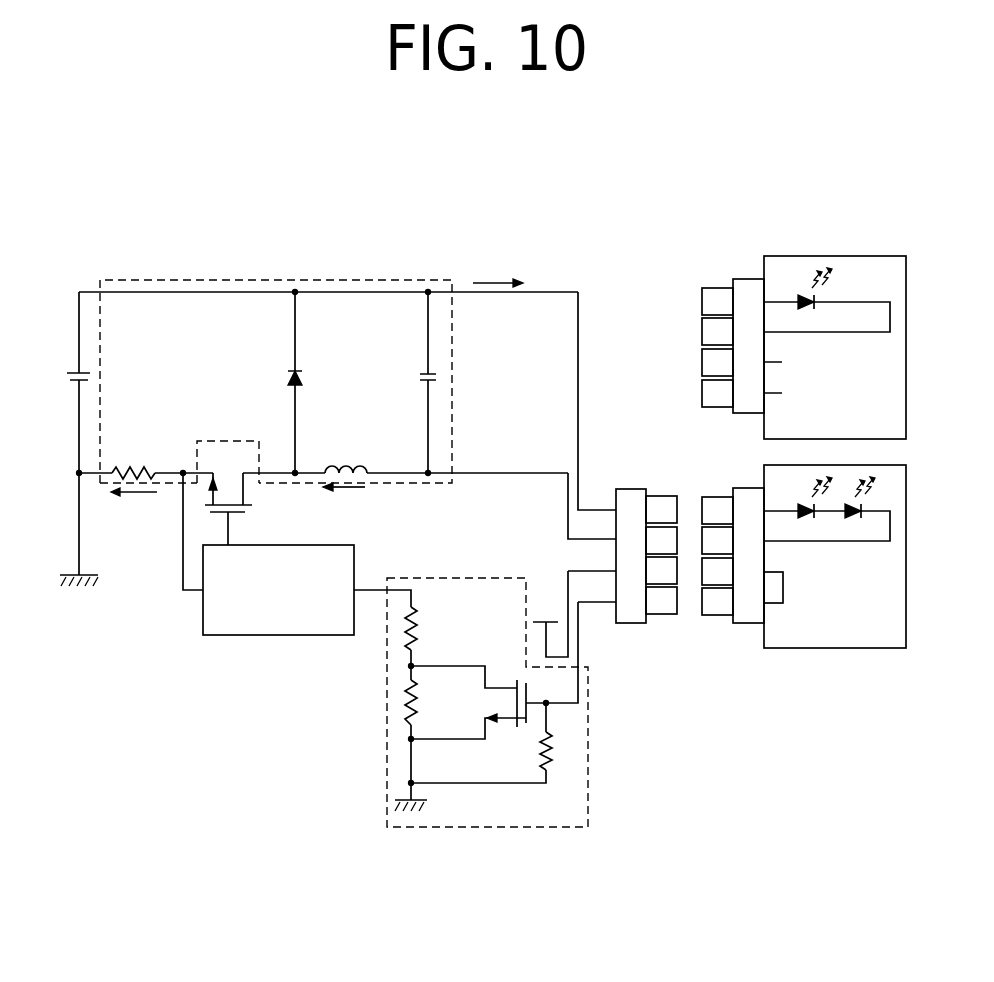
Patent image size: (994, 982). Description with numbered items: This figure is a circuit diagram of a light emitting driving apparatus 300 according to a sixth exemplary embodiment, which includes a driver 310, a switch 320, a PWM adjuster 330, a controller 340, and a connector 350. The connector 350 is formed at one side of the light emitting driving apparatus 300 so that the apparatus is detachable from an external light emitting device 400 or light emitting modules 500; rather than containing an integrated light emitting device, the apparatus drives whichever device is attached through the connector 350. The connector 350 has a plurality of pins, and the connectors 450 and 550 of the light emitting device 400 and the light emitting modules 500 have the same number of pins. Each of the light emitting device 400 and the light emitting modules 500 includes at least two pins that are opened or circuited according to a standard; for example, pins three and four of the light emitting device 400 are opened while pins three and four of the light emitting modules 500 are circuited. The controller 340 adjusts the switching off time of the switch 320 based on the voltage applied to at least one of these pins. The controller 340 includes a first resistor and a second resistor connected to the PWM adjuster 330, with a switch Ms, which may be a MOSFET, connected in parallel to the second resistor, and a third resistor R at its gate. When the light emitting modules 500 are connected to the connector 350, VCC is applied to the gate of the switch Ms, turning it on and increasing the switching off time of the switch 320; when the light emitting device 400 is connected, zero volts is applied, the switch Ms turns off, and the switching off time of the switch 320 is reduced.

The light emitting driving apparatus 300 is at (165, 222).
The driver 310 is at (257, 280).
The switch 320 is at (248, 502).
The PWM adjuster 330 is at (277, 636).
The controller 340 is at (387, 765).
The connector 350 is at (632, 625).
The light emitting device 400 is at (846, 236).
The connector 450 is at (744, 283).
The light emitting modules 500 is at (848, 670).
The connector 550 is at (750, 627).